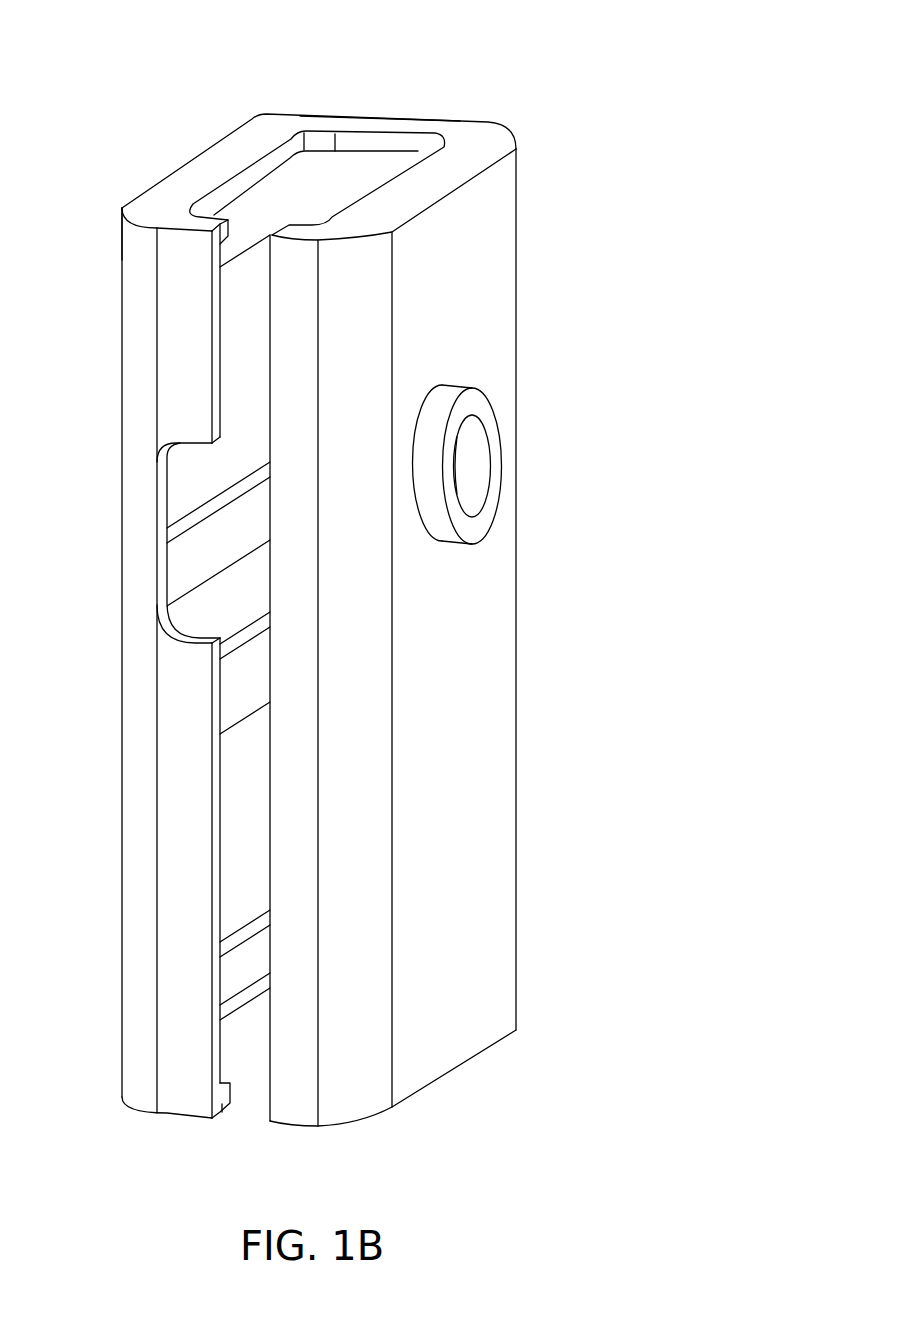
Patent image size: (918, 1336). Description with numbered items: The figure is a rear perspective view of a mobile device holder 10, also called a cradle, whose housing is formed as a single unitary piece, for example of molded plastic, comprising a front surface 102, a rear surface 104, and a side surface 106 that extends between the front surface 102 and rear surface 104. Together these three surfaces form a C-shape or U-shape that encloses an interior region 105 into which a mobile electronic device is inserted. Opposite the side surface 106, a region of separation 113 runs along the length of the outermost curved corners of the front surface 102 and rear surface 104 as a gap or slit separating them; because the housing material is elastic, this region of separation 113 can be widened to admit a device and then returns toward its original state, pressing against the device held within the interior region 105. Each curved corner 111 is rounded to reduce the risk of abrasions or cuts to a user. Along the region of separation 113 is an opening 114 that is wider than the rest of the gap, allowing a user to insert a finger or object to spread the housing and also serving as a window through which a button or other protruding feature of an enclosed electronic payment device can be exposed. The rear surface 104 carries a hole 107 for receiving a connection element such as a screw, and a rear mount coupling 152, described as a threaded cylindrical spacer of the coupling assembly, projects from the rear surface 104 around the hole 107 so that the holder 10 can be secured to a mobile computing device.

The mobile device holder 10 is at (532, 103).
The front surface 102 is at (121, 727).
The rear surface 104 is at (509, 850).
The interior region 105 is at (295, 178).
The side surface 106 is at (379, 112).
The hole 107 is at (467, 457).
The curved corner 111 is at (122, 207).
The region of separation 113 is at (247, 746).
The opening 114 is at (172, 502).
The rear mount coupling 152 is at (480, 385).